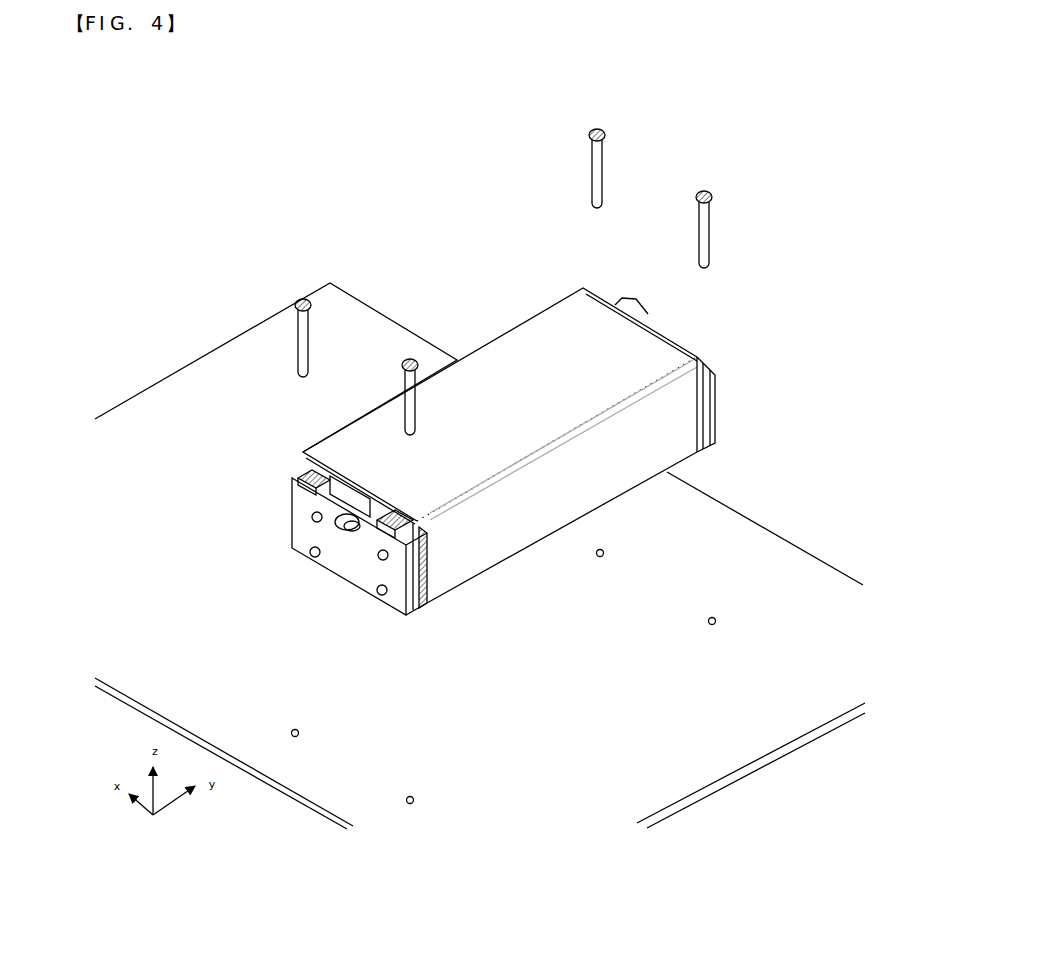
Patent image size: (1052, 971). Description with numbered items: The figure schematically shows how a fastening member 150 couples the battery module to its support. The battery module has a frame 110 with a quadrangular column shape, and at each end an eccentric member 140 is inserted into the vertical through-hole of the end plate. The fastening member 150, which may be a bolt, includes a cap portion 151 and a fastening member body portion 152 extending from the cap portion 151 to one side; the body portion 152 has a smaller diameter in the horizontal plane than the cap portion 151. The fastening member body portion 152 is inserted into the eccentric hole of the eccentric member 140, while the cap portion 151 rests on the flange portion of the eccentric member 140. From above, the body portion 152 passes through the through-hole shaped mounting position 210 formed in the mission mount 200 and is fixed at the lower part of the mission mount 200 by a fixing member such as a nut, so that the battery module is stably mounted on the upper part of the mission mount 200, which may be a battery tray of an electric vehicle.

The frame 110 is at (527, 342).
The eccentric member 140 is at (302, 474).
The fastening member 150 is at (298, 316).
The cap portion 151 is at (600, 127).
The fastening member body portion 152 is at (590, 160).
The mission mount 200 is at (747, 510).
The mounting position 210 is at (714, 617).